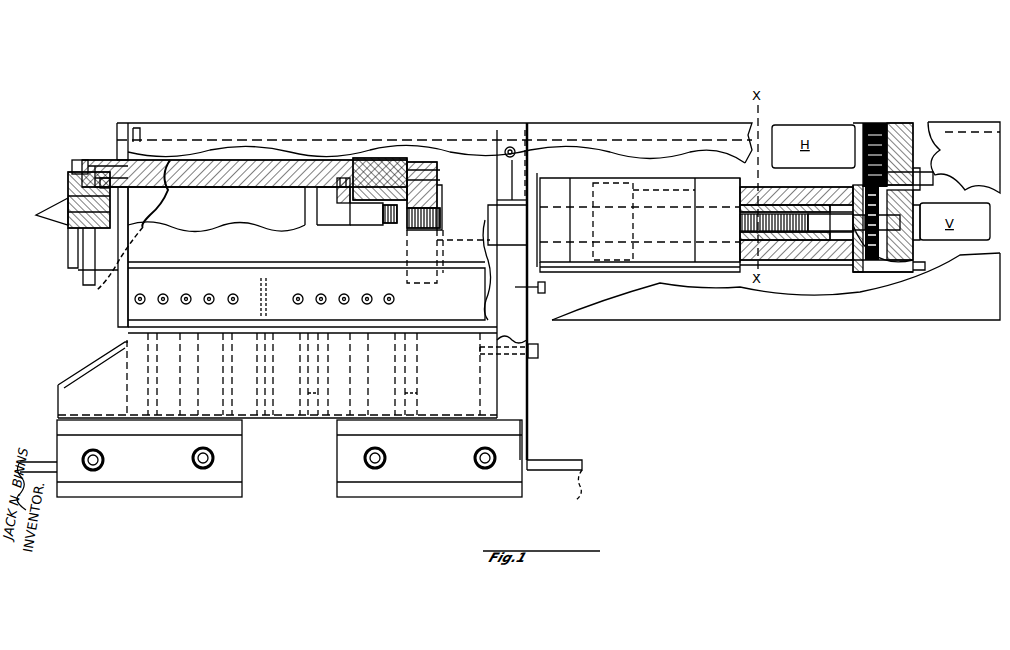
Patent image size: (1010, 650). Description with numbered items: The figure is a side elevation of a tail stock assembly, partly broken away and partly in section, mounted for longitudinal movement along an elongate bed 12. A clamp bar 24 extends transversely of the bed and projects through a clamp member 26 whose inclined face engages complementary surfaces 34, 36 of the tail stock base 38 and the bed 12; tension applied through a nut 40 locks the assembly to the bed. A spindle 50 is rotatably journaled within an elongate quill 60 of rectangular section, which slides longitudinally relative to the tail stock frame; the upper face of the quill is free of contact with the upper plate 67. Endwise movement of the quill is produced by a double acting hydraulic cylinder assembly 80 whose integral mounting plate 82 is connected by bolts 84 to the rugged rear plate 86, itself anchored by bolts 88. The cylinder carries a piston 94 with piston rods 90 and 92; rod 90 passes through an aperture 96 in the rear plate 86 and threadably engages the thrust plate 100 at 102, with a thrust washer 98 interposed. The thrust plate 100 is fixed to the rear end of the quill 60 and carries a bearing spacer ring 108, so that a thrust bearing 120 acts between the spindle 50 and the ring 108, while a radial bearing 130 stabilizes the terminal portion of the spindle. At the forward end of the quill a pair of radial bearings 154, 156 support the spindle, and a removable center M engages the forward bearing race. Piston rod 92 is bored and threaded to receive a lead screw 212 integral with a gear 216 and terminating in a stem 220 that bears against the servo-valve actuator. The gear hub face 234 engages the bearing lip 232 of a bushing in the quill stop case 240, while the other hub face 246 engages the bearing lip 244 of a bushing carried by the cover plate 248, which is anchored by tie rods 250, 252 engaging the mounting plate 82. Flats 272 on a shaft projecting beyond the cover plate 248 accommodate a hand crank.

The elongate bed 12 is at (575, 485).
The clamp bar 24 is at (193, 460).
The clamp member 26 is at (220, 482).
The complementary surface of tail stock base 34 is at (290, 425).
The complementary surface of bed 36 is at (553, 462).
The tail stock base 38 is at (265, 400).
The nut 40 is at (104, 460).
The spindle 50 is at (222, 257).
The quill 60 is at (245, 173).
The upper plate 67 is at (340, 130).
The hydraulic cylinder assembly 80 is at (582, 185).
The mounting plate 82 is at (532, 170).
The bolt 84 is at (545, 287).
The rear plate 86 is at (522, 378).
The bolt 88 is at (540, 350).
The piston rod 90 is at (507, 222).
The piston rod 92 is at (665, 213).
The piston 94 is at (618, 197).
The aperture 96 is at (513, 205).
The thrust washer 98 is at (440, 192).
The thrust plate 100 is at (413, 175).
The threaded engagement 102 is at (447, 222).
The bearing spacer ring 108 is at (368, 178).
The thrust bearing 120 is at (335, 193).
The radial bearing 130 is at (390, 205).
The radial bearing 154 is at (100, 178).
The radial bearing 156 is at (118, 180).
The removable center M is at (52, 218).
The lead screw 212 is at (830, 213).
The gear 216 is at (872, 257).
The stem 220 is at (912, 223).
The bearing lip 232 is at (857, 243).
The axial face 234 is at (842, 243).
The quill stop case 240 is at (863, 127).
The bearing lip 244 is at (888, 257).
The axial face 246 is at (892, 257).
The cover plate 248 is at (897, 127).
The tie rod 250 is at (812, 263).
The tie rod 252 is at (925, 263).
The flats 272 is at (933, 178).